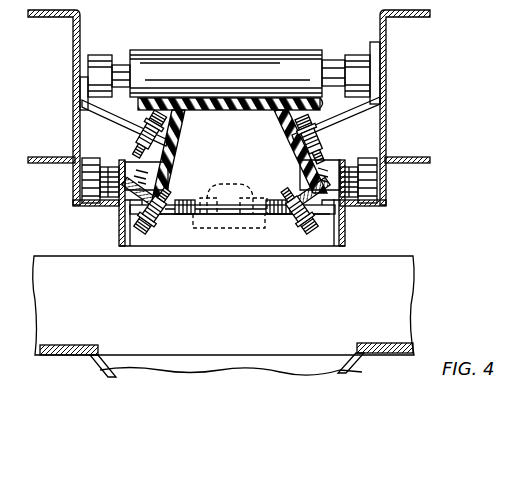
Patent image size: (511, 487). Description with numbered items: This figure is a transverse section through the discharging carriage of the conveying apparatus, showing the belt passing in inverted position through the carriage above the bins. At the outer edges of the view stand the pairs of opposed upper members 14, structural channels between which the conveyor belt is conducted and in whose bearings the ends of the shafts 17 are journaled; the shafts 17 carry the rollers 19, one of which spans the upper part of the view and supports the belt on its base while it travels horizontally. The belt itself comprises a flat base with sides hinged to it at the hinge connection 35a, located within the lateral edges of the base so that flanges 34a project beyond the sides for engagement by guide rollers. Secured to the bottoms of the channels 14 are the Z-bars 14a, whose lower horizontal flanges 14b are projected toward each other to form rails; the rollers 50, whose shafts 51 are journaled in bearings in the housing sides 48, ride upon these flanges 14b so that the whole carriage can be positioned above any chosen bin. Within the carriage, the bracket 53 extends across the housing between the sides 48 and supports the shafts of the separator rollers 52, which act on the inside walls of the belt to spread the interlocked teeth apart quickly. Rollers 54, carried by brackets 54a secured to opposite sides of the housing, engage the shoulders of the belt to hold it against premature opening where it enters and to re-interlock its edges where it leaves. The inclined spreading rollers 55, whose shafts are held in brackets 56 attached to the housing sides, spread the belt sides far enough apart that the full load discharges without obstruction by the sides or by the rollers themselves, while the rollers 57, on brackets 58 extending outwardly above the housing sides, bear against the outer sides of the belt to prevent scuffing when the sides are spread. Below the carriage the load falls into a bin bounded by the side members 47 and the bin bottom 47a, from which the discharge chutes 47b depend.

The opposed upper members 14 is at (77, 32).
The Z-bars 14a is at (432, 197).
The lower horizontal flanges 14b is at (407, 218).
The roller shafts 17 is at (124, 62).
The rollers 19 is at (228, 60).
The flanges 34a is at (336, 70).
The hinge connection 35a is at (183, 112).
The side members 47 is at (390, 290).
The bin bottom 47a is at (82, 358).
The discharge chutes 47b is at (366, 355).
The housing sides 48 is at (120, 233).
The rollers 50 is at (97, 159).
The roller shafts 51 is at (104, 167).
The separator rollers 52 is at (183, 200).
The bracket 53 is at (158, 218).
The rollers 54 is at (233, 193).
The brackets 54a is at (243, 224).
The spreading rollers 55 is at (177, 197).
The brackets 56 is at (128, 240).
The rollers 57 is at (180, 137).
The brackets 58 is at (131, 124).